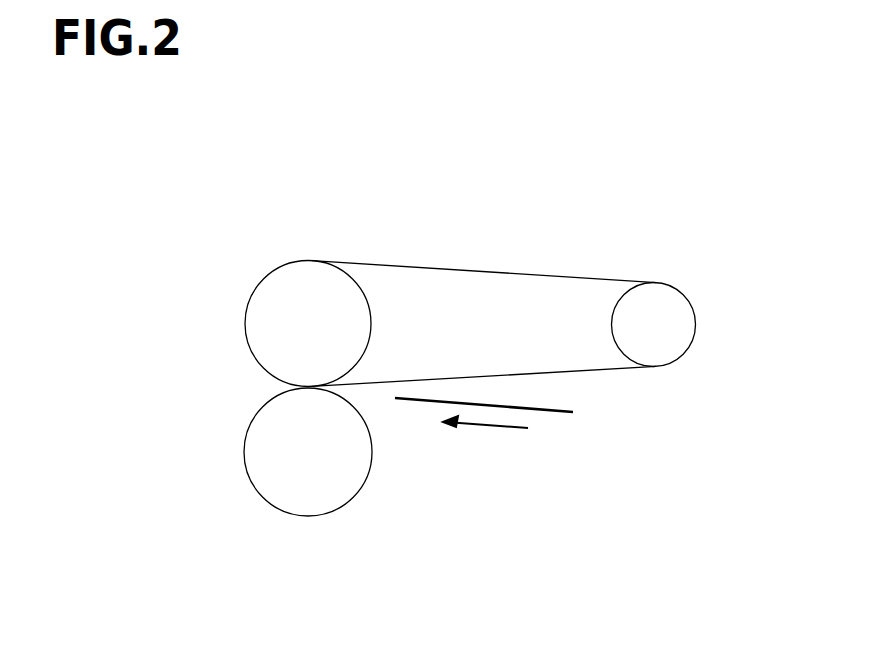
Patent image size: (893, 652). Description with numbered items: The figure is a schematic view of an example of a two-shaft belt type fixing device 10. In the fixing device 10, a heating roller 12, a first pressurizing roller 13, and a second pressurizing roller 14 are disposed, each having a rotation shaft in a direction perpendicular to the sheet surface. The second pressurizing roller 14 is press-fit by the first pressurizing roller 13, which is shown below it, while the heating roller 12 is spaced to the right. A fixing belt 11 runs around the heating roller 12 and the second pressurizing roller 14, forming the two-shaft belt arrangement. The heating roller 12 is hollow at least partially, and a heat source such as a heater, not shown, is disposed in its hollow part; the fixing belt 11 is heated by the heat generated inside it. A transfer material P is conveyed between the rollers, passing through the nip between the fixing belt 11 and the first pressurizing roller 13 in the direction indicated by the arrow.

The fixing device 10 is at (455, 235).
The fixing belt 11 is at (518, 273).
The heating roller 12 is at (670, 299).
The first pressurizing roller 13 is at (275, 470).
The second pressurizing roller 14 is at (265, 298).
The transfer material P is at (562, 410).